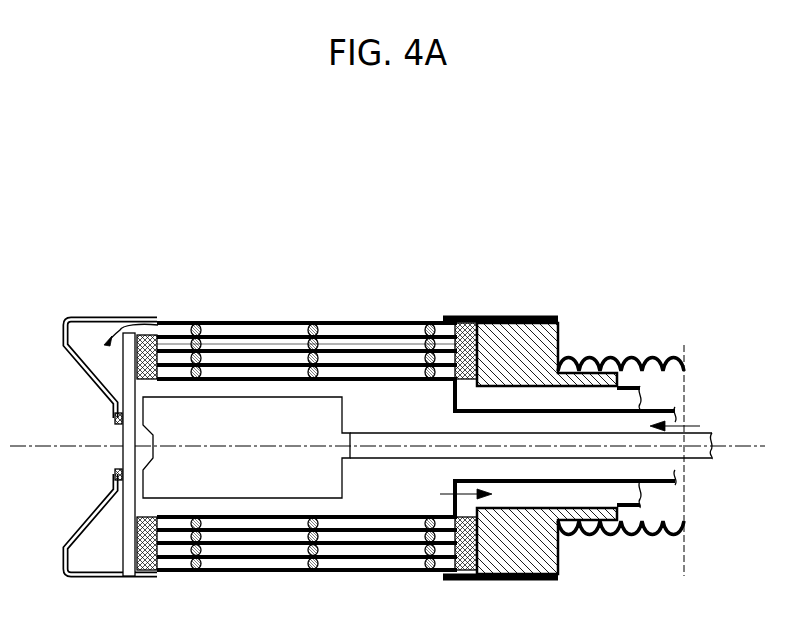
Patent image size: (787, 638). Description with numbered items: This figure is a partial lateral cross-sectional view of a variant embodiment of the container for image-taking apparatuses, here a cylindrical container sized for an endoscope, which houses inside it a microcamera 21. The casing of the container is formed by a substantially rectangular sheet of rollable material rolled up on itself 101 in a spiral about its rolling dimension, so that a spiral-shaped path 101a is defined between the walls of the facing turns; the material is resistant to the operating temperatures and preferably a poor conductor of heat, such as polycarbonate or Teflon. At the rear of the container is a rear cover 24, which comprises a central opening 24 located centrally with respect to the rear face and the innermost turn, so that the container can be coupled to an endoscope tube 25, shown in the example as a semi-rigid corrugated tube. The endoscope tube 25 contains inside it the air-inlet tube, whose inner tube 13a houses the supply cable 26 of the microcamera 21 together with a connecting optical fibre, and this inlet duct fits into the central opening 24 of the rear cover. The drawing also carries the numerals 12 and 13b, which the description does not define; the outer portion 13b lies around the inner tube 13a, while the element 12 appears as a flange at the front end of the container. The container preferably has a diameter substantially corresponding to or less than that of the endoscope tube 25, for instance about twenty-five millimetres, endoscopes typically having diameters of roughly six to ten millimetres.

The mounting flange 12 is at (64, 330).
The sheet of rollable material rolled up on itself 101 is at (248, 322).
The spiral-shaped path 101a is at (280, 346).
The microcamera 21 is at (330, 481).
The rear cover with central opening 24 is at (517, 328).
The endoscope tube 25 is at (617, 352).
The supply cable 26 is at (786, 428).
The inner tube 13a is at (727, 502).
The outer tube 13b is at (642, 494).